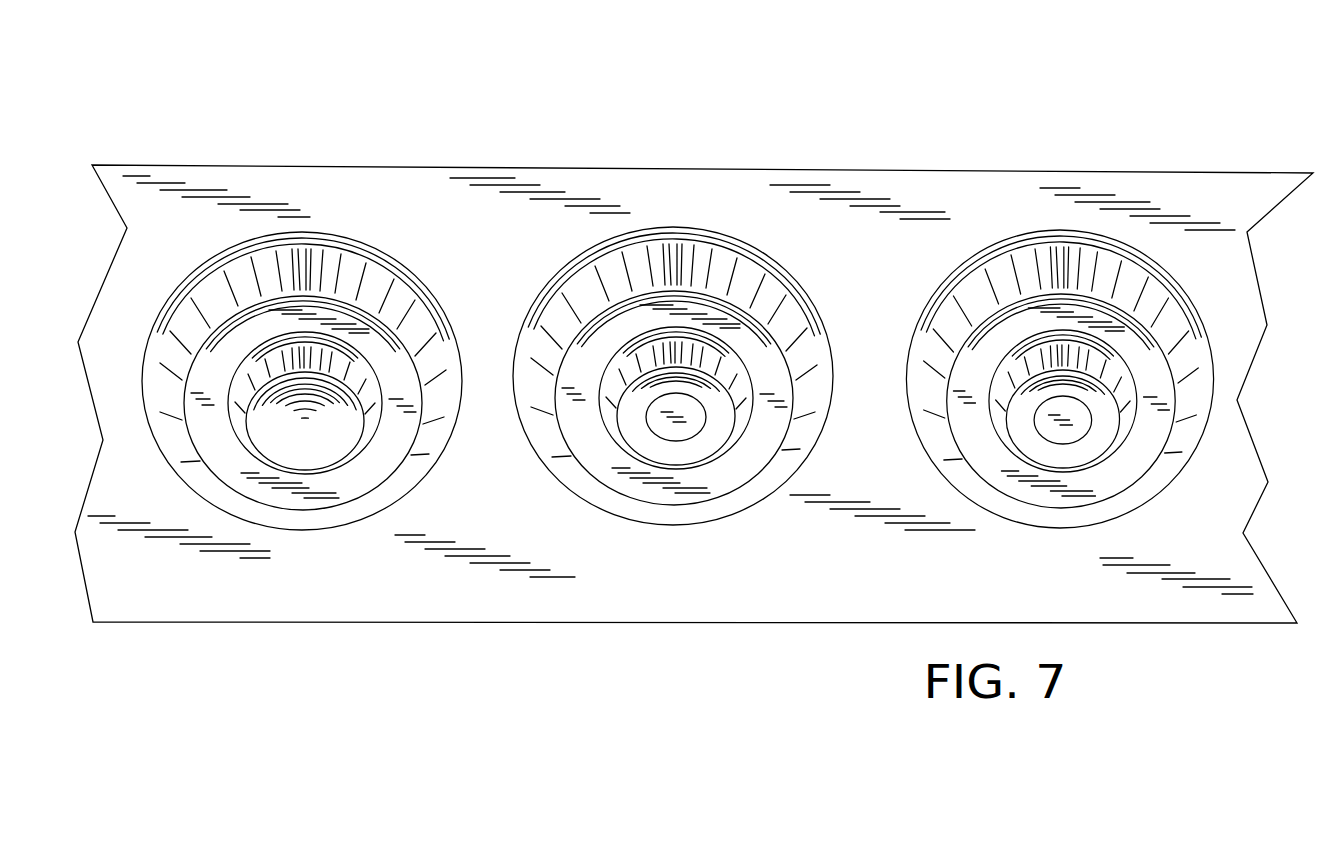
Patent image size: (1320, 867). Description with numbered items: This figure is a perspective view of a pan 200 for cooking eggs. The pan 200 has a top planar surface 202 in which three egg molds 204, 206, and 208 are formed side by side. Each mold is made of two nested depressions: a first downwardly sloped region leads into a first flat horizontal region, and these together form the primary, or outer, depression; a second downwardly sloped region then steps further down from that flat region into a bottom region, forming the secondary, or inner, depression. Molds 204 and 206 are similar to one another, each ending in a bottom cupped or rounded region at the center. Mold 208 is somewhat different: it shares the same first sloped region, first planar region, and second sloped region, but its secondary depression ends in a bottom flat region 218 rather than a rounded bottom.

The pan 200 is at (965, 118).
The top planar surface 202 is at (840, 278).
The egg mold 204 is at (1078, 238).
The egg mold 206 is at (700, 235).
The egg mold 208 is at (343, 240).
The bottom flat region 218 is at (305, 421).